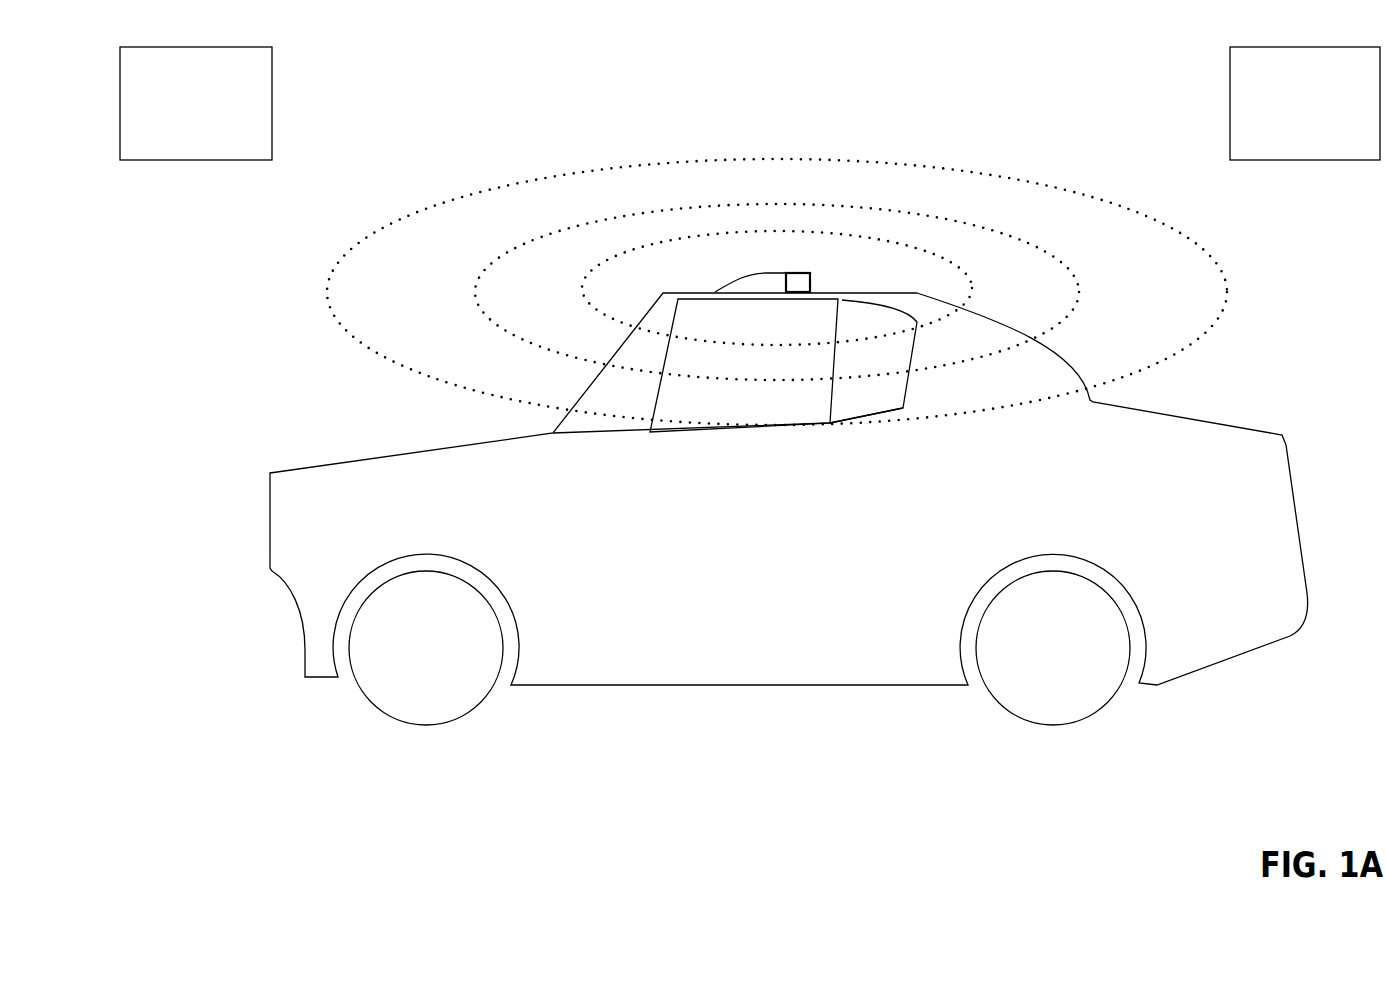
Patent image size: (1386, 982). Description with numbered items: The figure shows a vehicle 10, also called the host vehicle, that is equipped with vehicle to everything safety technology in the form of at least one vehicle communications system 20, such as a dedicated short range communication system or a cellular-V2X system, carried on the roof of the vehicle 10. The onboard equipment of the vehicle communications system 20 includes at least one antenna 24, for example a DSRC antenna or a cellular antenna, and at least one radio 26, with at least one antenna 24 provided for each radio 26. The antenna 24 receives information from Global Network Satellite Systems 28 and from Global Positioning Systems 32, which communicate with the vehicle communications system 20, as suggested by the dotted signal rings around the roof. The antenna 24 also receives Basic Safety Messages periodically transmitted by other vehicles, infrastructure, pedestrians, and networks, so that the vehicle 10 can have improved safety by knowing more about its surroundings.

The vehicle 10 is at (413, 452).
The vehicle communications system 20 is at (764, 268).
The antenna 24 is at (763, 283).
The radio 26 is at (810, 291).
The Global Network Satellite Systems (GNSS) 28 is at (120, 100).
The Global Positioning Systems (GPS) 32 is at (1230, 100).